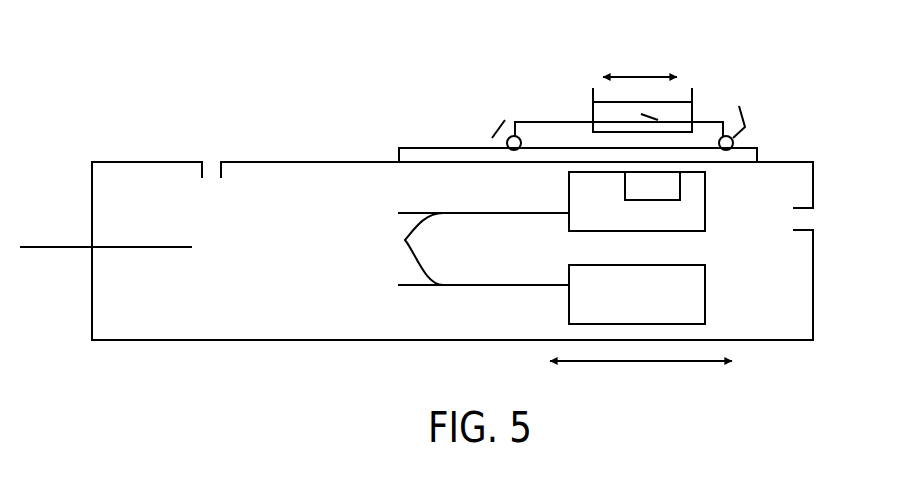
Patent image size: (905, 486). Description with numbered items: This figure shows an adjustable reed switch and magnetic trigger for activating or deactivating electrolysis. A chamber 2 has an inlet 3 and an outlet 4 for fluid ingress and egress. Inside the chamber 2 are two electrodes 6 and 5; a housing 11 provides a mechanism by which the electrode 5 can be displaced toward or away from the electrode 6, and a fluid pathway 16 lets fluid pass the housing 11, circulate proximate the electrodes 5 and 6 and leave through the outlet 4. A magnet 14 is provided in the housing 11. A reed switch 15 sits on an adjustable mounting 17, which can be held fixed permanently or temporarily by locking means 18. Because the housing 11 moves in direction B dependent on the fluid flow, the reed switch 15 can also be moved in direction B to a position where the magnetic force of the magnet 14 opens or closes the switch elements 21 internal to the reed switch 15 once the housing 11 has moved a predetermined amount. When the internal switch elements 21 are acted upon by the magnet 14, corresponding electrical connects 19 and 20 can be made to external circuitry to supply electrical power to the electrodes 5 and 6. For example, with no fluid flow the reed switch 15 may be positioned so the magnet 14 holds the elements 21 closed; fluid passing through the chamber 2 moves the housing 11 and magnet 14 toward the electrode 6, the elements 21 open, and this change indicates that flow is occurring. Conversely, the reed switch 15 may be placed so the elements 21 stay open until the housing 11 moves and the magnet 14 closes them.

The chamber 2 is at (204, 298).
The inlet 3 is at (810, 215).
The outlet 4 is at (212, 160).
The electrode 5 is at (477, 249).
The electrode 6 is at (140, 247).
The housing 11 is at (583, 223).
The magnet 14 is at (644, 198).
The reed switch 15 is at (628, 75).
The fluid pathway 16 is at (624, 261).
The adjustable mounting 17 is at (397, 148).
The locking means 18 is at (500, 122).
The electrical connect 19 is at (593, 90).
The electrical connect 20 is at (692, 90).
The switch elements 21 is at (662, 116).
The direction B is at (645, 362).